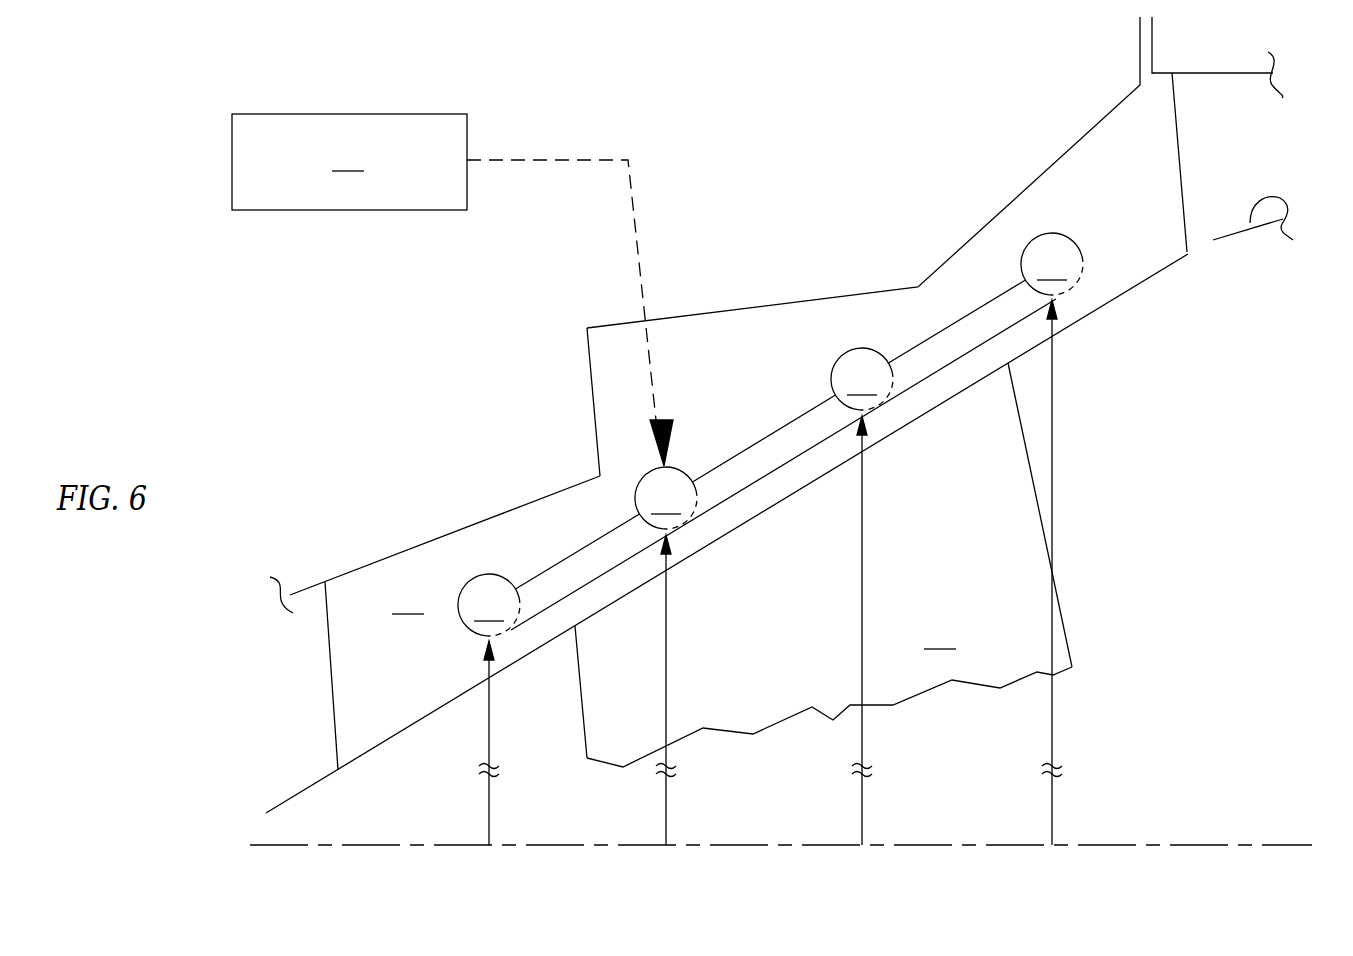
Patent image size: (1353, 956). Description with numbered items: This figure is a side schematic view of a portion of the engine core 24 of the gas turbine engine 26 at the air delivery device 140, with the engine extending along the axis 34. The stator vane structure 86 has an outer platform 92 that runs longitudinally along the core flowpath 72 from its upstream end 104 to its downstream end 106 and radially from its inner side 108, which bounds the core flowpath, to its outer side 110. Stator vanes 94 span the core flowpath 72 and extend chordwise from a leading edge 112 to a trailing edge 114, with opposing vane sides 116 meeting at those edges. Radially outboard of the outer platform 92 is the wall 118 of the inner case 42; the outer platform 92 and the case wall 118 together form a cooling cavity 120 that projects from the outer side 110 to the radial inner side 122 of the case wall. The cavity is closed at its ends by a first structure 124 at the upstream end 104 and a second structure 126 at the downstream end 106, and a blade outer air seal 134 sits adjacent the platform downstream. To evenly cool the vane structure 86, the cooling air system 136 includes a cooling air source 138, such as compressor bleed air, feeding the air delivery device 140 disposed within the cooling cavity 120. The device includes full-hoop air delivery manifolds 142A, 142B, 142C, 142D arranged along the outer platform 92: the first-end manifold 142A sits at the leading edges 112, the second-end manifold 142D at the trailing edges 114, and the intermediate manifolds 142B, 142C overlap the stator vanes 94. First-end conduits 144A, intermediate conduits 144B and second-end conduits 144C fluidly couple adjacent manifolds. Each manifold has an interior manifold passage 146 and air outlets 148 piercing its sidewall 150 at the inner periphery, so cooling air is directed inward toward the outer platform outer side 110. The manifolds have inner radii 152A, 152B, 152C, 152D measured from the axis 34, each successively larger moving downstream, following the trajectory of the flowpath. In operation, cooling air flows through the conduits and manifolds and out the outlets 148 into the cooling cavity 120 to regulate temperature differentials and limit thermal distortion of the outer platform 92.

The engine core 24 is at (206, 336).
The gas turbine engine 26 is at (247, 372).
The axis 34 is at (273, 847).
The inner case 42 is at (445, 527).
The case wall 118 is at (385, 545).
The core flowpath 72 is at (1158, 416).
The stator vane structure 86 is at (1082, 510).
The outer platform 92 is at (414, 742).
The stator vanes 94 is at (1070, 606).
The upstream end 104 is at (266, 813).
The downstream end 106 is at (1197, 244).
The radial inner side 108 is at (362, 757).
The radial outer side 110 is at (380, 742).
The leading edge 112 is at (583, 730).
The trailing edge 114 is at (1076, 662).
The vane sides 116 is at (829, 565).
The cooling cavity 120 is at (408, 602).
The radial inner side 122 is at (322, 620).
The first structure 124 is at (332, 675).
The second structure 126 is at (1178, 153).
The blade outer air seal 134 is at (1263, 200).
The cooling air system 136 is at (648, 150).
The cooling air source 138 is at (349, 162).
The air delivery device 140 is at (957, 305).
The first-end manifold 142A is at (487, 573).
The first-intermediate manifold 142B is at (678, 465).
The second-intermediate manifold 142C is at (859, 347).
The second-end manifold 142D is at (1045, 232).
The first-end conduits 144A is at (590, 585).
The intermediate conduits 144B is at (748, 490).
The second-end conduits 144C is at (942, 370).
The manifold passage 146 is at (770, 434).
The air outlets 148 is at (507, 632).
The sidewall 150 is at (636, 499).
The first-end manifold radius 152A is at (490, 818).
The first-intermediate manifold radius 152B is at (668, 808).
The second-intermediate manifold radius 152C is at (864, 808).
The second-end manifold radius 152D is at (1054, 808).